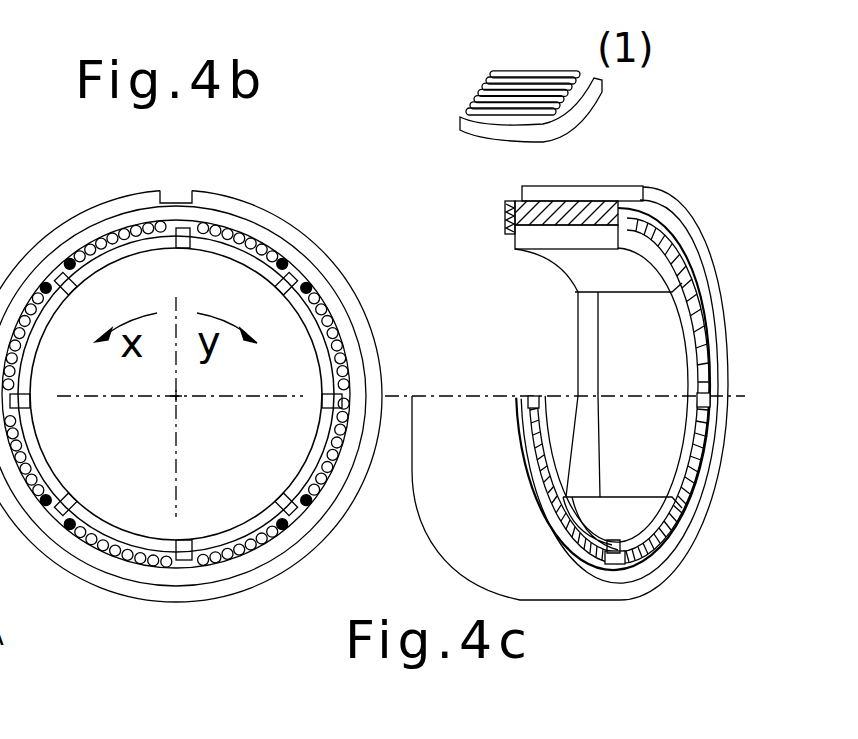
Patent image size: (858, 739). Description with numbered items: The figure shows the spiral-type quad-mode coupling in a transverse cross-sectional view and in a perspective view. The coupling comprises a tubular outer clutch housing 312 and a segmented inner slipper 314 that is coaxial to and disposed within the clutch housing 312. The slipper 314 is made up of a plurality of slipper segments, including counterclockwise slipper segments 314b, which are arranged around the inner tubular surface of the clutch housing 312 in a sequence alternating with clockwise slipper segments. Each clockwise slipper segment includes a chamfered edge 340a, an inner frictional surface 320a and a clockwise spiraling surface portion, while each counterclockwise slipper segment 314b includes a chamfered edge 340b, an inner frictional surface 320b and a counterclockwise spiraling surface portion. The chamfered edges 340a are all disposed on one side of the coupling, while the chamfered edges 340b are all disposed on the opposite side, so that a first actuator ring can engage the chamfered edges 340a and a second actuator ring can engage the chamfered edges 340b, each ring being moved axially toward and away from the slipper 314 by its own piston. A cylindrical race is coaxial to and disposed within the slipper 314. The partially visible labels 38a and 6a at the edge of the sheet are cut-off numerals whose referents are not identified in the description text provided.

In FIG. 4B, the tubular outer clutch housing 312 is at (205, 590).
In FIG. 4C, the tubular outer clutch housing 312 is at (620, 590).
In FIG. 4C, the segmented inner slipper 314 is at (570, 238).
In FIG. 4B, the slipper segment 314b is at (140, 278).
In FIG. 4B, the inner frictional surface 320a is at (317, 425).
In FIG. 4B, the inner frictional surface 320b is at (70, 437).
In FIG. 4B, the chamfered edge 340a is at (238, 258).
In FIG. 4C, the chamfered edge 340a is at (645, 255).
In FIG. 4C, the chamfered edge 340b is at (470, 142).
In FIG. 4B, the partial numeral (cut off) 38a is at (24, 166).
In FIG. 4B, the partial numeral (cut off) 6a is at (16, 206).